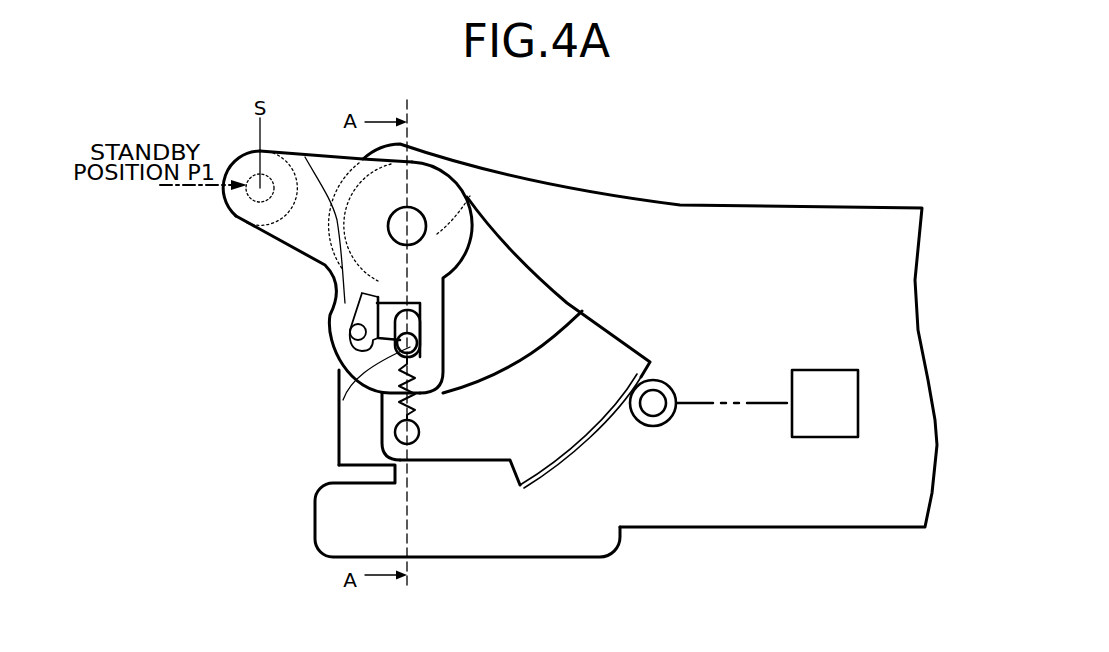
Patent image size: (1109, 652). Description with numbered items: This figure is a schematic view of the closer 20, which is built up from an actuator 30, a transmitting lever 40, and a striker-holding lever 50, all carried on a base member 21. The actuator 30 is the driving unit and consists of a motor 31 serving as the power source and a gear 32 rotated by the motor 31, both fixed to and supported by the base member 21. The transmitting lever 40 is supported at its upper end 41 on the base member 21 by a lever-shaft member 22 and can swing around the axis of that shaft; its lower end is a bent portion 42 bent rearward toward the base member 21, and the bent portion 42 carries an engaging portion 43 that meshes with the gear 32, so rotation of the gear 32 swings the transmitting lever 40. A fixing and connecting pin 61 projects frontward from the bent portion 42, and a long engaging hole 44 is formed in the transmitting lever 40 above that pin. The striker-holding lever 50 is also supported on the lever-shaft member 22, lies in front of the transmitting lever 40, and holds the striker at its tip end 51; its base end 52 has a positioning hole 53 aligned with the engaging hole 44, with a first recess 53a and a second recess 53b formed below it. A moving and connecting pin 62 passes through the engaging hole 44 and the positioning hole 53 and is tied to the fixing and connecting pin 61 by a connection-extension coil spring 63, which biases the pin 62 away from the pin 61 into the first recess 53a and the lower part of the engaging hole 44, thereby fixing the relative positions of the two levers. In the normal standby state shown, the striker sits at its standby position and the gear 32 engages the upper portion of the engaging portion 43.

The closer 20 is at (727, 123).
The base member 21 is at (892, 207).
The lever-shaft member 22 is at (416, 212).
The actuator 30 is at (840, 574).
The motor 31 is at (830, 438).
The gear 32 is at (653, 428).
The transmitting lever 40 is at (510, 285).
The upper end 41 is at (458, 200).
The bent portion 42 is at (492, 456).
The engaging portion 43 is at (548, 468).
The engaging hole 44 is at (412, 346).
The striker-holding lever 50 is at (288, 234).
The tip end 51 is at (235, 214).
The base end 52 is at (335, 303).
The positioning hole 53 is at (305, 157).
The first recess 53a is at (433, 318).
The second recess 53b is at (350, 334).
The fixing and connecting pin 61 is at (421, 444).
The moving and connecting pin 62 is at (340, 413).
The connection-extension coil spring 63 is at (383, 395).